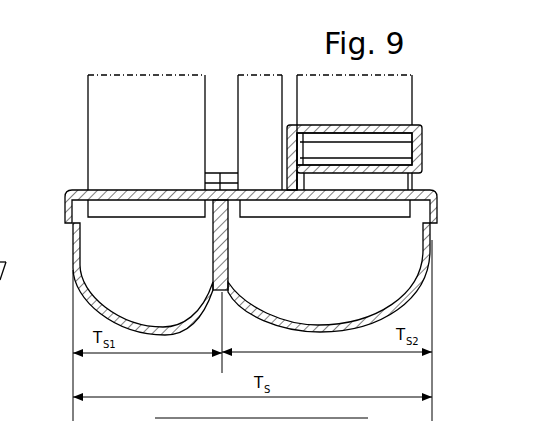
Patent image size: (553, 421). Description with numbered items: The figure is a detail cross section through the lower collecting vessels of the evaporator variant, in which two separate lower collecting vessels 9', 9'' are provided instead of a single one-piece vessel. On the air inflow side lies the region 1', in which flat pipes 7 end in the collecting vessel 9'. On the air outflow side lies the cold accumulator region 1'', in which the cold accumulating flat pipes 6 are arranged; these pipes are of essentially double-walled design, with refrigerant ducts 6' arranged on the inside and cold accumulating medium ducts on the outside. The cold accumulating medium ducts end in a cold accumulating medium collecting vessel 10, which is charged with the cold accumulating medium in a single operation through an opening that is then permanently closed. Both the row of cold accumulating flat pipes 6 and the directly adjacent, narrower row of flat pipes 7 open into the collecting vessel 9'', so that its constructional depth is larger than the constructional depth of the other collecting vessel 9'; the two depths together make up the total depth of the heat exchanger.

The region 1' is at (116, 132).
The cold accumulator region 1'' is at (397, 132).
The flat pipes 7 is at (125, 110).
The cold accumulating flat pipes 6 is at (389, 150).
The refrigerant ducts 6' is at (272, 243).
The cold accumulating medium collecting vessel 10 is at (392, 148).
The collecting vessel 9' is at (143, 279).
The collecting vessel 9'' is at (329, 277).